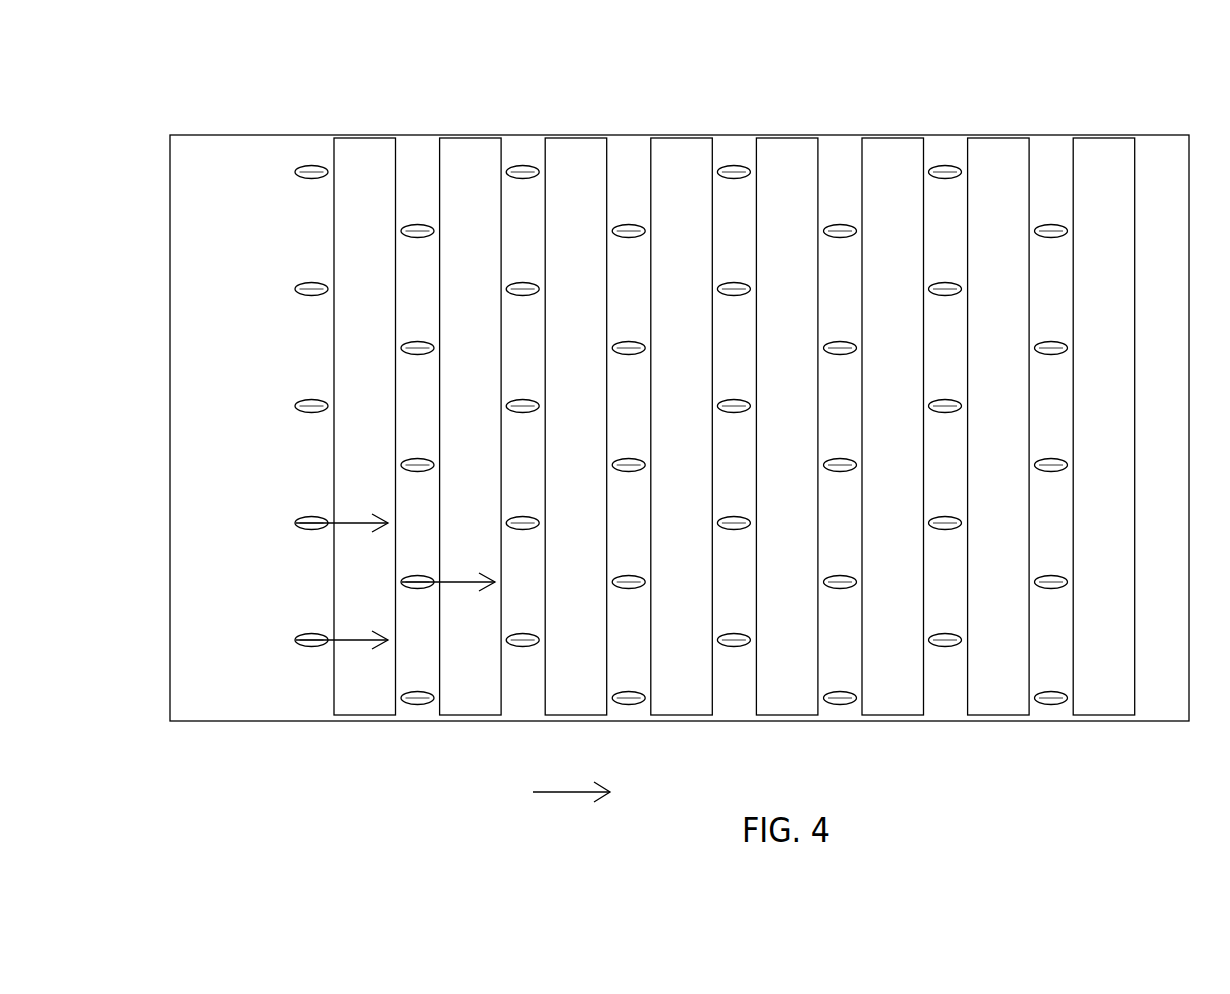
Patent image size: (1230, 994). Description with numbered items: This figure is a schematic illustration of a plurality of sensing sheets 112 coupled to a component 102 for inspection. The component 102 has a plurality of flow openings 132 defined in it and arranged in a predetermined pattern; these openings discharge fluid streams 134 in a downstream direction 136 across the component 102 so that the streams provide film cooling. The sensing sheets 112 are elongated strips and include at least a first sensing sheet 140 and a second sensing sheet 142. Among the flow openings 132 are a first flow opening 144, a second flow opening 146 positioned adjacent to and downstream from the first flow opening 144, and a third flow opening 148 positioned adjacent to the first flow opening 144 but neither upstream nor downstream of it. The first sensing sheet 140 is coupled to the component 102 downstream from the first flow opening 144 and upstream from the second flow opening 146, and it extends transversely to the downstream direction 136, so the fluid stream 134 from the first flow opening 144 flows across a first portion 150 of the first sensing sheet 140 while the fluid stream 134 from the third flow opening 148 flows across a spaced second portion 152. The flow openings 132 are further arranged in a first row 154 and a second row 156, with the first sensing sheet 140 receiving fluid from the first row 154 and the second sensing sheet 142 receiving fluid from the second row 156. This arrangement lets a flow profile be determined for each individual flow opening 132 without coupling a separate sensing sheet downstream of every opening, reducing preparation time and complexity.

The component 102 is at (1122, 85).
The sensing sheets 112 is at (363, 105).
The flow openings 132 is at (408, 714).
The fluid streams 134 is at (343, 525).
The downstream direction 136 is at (568, 793).
The first sensing sheet 140 is at (374, 705).
The second sensing sheet 142 is at (480, 705).
The first flow opening 144 is at (295, 638).
The second flow opening 146 is at (401, 581).
The third flow opening 148 is at (295, 521).
The first portion 150 is at (353, 630).
The second portion 152 is at (353, 508).
The first row 154 is at (307, 108).
The second row 156 is at (409, 178).